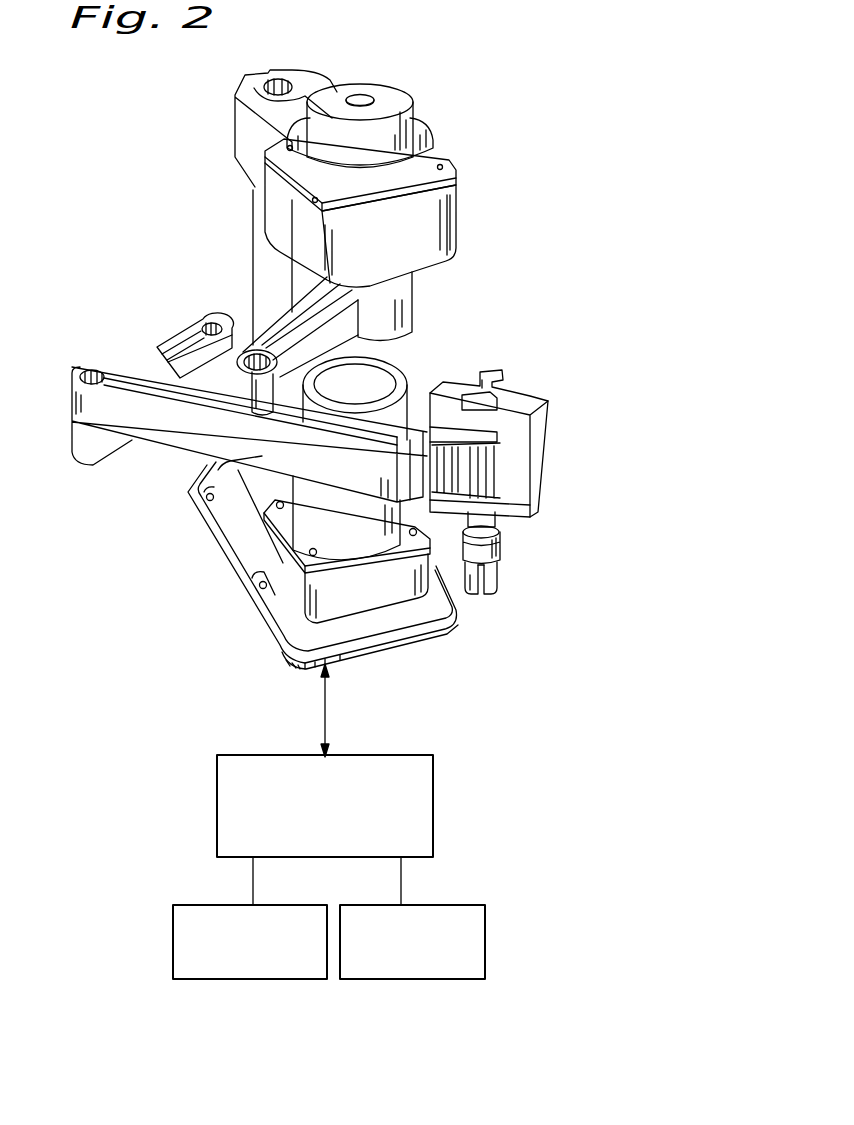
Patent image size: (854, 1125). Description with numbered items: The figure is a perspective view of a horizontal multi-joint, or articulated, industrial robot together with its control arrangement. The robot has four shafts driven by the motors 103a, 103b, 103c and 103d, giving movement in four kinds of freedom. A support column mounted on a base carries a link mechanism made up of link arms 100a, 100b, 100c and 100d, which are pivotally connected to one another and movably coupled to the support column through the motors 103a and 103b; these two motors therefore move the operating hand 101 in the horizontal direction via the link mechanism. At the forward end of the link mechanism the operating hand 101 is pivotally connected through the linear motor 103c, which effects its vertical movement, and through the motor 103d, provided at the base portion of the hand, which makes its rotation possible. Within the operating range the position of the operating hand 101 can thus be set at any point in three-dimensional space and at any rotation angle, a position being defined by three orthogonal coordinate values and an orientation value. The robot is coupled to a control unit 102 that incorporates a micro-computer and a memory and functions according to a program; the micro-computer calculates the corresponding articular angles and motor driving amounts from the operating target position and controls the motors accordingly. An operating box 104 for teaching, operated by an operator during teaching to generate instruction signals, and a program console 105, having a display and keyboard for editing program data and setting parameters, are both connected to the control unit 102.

The link arm 100a is at (167, 437).
The link arm 100b is at (167, 352).
The link arm 100c is at (338, 338).
The link arm 100d is at (227, 380).
The operating hand 101 is at (498, 582).
The control unit 102 is at (432, 797).
The motor 103a is at (437, 218).
The motor 103b is at (317, 595).
The linear motor 103c is at (547, 443).
The motor 103d is at (500, 547).
The operating box for teaching 104 is at (253, 975).
The program console 105 is at (422, 975).